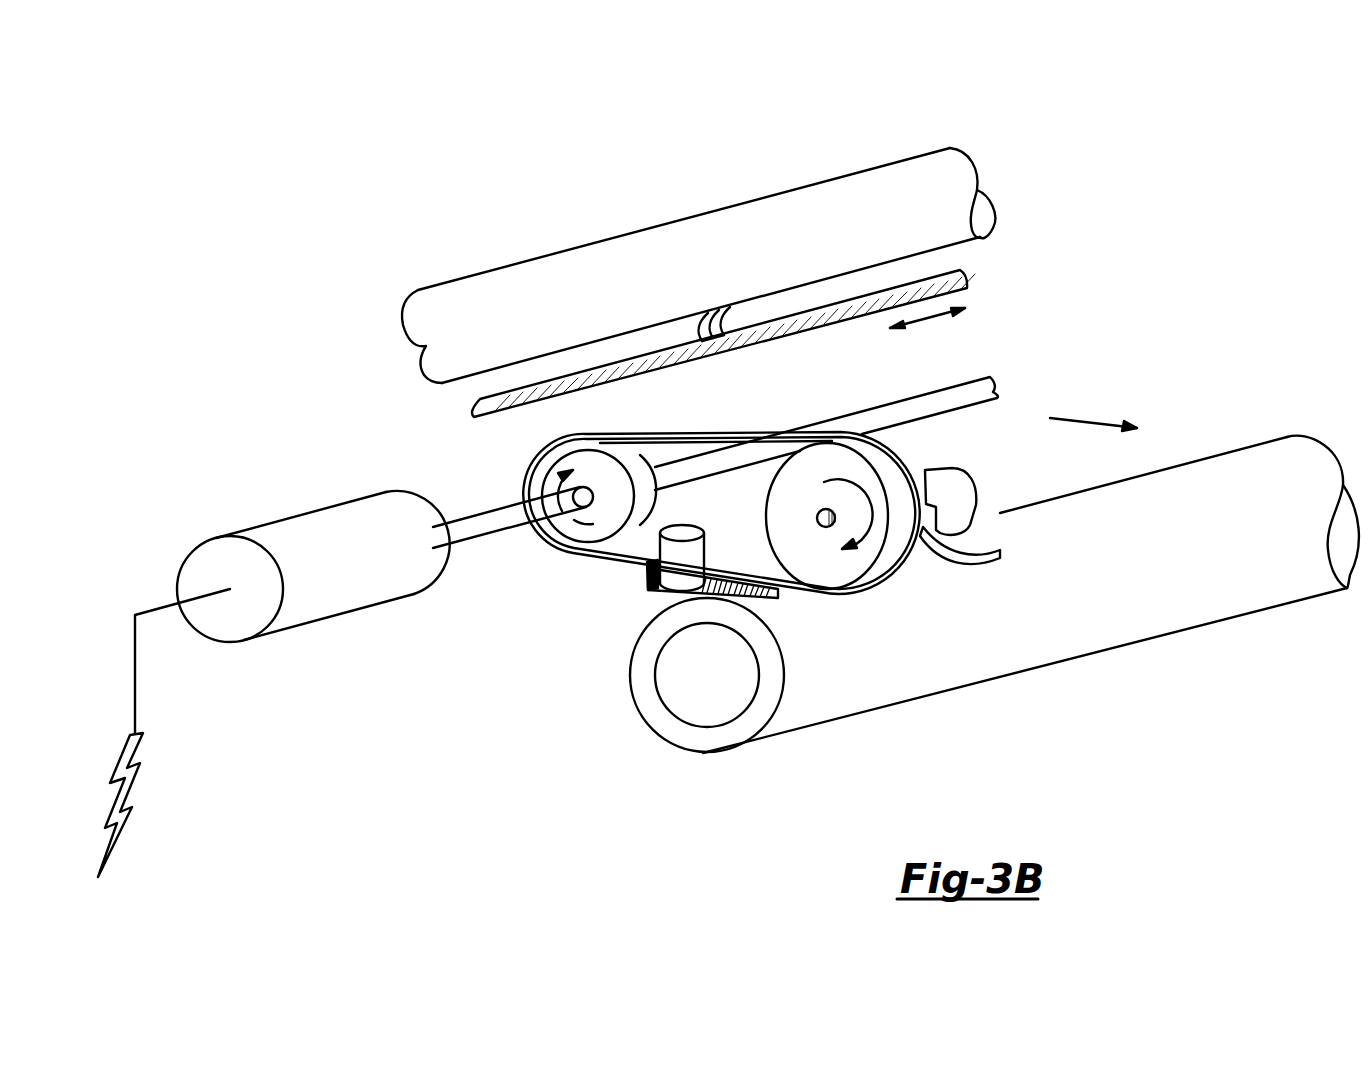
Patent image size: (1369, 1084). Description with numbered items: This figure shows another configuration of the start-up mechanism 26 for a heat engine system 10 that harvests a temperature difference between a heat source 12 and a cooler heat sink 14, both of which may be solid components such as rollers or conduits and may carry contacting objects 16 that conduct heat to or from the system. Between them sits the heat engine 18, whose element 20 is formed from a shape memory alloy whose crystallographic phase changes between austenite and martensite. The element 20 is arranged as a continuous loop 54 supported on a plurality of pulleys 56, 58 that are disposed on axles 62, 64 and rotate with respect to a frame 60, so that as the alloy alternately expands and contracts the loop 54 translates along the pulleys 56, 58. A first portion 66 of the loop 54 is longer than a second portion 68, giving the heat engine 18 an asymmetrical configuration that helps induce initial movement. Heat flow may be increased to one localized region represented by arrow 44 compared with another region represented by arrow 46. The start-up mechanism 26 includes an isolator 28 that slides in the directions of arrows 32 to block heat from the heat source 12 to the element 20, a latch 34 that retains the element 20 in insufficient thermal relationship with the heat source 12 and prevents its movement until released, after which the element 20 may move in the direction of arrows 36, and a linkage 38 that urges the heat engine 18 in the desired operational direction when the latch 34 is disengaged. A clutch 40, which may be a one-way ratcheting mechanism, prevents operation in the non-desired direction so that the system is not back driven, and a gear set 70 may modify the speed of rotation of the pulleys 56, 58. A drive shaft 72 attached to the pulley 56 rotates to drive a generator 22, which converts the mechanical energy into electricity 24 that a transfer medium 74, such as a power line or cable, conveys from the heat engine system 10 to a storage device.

The heat engine system 10 is at (495, 160).
The heat source 12 is at (815, 183).
The heat sink 14 is at (1248, 610).
The contacting objects 16 is at (735, 320).
The heat engine 18 is at (533, 590).
The element 20 is at (586, 558).
The generator 22 is at (371, 608).
The electricity 24 is at (135, 788).
The start-up mechanism 26 is at (440, 418).
The isolator 28 is at (957, 272).
The arrows 32 is at (927, 318).
The latch 34 is at (729, 562).
The arrows 36 is at (1083, 420).
The linkage 38 is at (665, 557).
The clutch 40 is at (542, 472).
The arrow 44 is at (808, 610).
The arrow 46 is at (805, 420).
The continuous loop 54 is at (957, 426).
The pulley 56 is at (653, 512).
The pulley 58 is at (764, 580).
The frame 60 is at (973, 502).
The axle 62 is at (705, 460).
The axle 64 is at (930, 469).
The first portion 66 is at (898, 607).
The second portion 68 is at (595, 420).
The gear set 70 is at (815, 516).
The drive shaft 72 is at (469, 527).
The transfer medium 74 is at (135, 697).